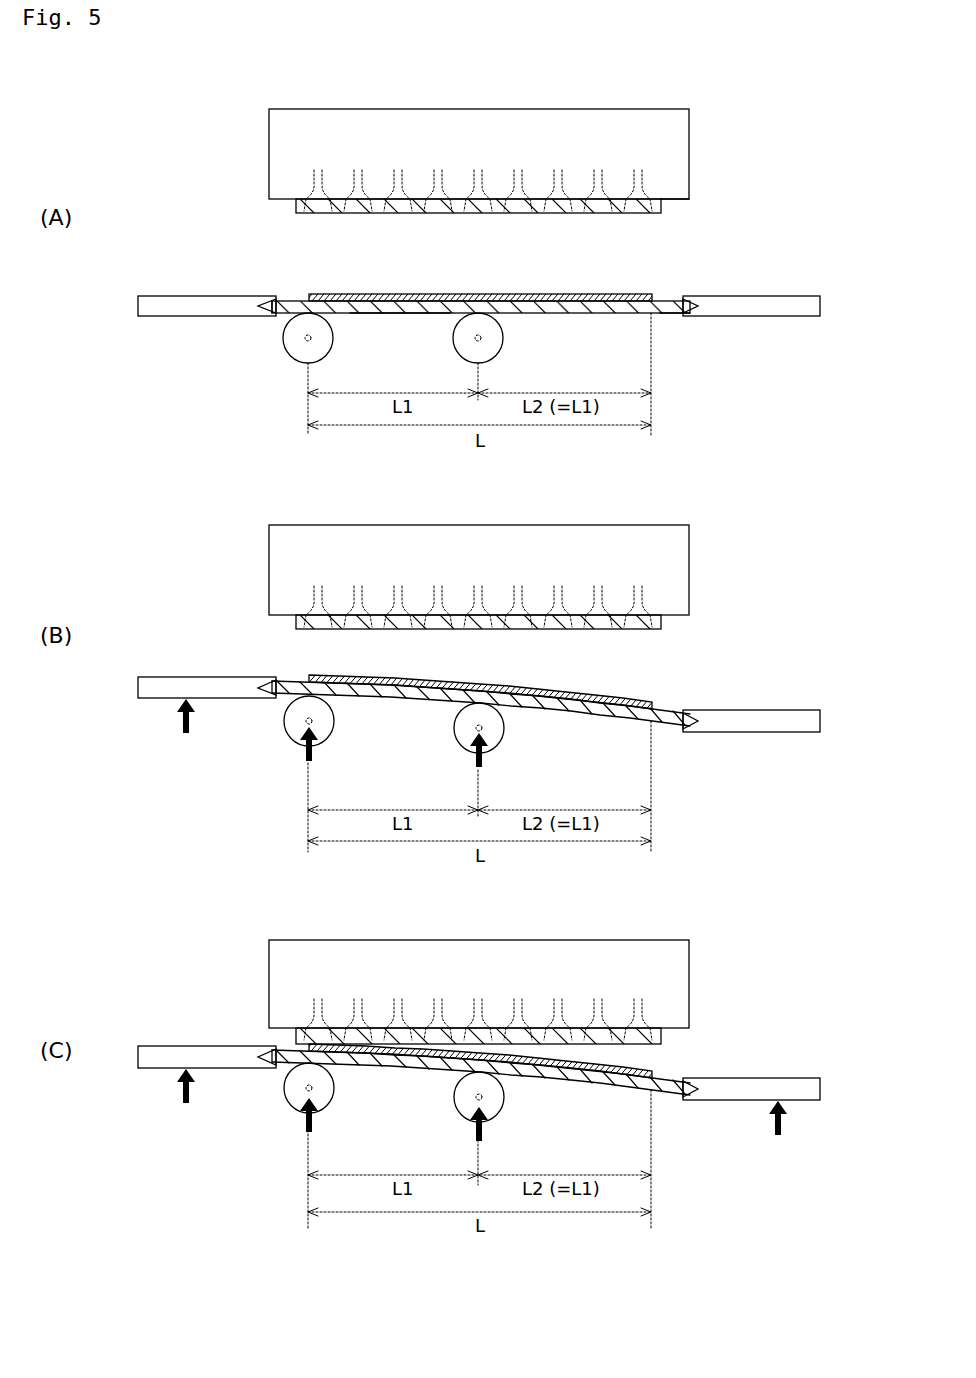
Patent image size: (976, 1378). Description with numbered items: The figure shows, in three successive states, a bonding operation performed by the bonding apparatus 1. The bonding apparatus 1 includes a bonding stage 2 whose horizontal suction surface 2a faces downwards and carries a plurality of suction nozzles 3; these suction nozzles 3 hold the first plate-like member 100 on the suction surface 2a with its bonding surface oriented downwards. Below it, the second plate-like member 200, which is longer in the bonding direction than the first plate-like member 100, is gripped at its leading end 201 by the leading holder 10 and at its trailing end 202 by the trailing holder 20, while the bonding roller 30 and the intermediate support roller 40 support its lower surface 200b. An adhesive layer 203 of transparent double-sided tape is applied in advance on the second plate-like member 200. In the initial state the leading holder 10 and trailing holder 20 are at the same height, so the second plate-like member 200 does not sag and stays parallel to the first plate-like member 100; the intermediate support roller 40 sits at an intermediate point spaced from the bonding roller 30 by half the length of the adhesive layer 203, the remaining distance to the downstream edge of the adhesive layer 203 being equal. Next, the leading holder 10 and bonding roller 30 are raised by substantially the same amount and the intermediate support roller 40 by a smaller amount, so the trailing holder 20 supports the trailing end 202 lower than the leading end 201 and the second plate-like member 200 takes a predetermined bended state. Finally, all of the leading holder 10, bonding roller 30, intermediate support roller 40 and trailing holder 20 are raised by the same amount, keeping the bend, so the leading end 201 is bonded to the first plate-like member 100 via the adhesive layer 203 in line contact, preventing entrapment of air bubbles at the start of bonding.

The bonding apparatus 1 is at (175, 131).
The bonding stage 2 is at (683, 150).
The suction surface 2a is at (678, 203).
The suction nozzles 3 is at (400, 178).
The leading holder 10 is at (193, 300).
The trailing holder 20 is at (768, 300).
The bonding roller 30 is at (330, 350).
The intermediate support roller 40 is at (498, 351).
The first plate-like member 100 is at (296, 205).
The second plate-like member 200 is at (570, 315).
The lower surface 200b is at (430, 316).
The leading end 201 is at (297, 295).
The trailing end 202 is at (665, 320).
The adhesive layer 203 is at (541, 294).